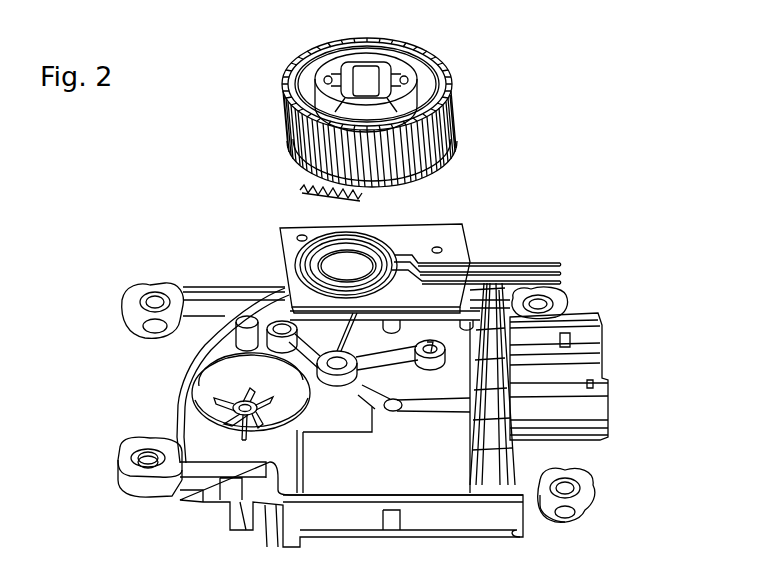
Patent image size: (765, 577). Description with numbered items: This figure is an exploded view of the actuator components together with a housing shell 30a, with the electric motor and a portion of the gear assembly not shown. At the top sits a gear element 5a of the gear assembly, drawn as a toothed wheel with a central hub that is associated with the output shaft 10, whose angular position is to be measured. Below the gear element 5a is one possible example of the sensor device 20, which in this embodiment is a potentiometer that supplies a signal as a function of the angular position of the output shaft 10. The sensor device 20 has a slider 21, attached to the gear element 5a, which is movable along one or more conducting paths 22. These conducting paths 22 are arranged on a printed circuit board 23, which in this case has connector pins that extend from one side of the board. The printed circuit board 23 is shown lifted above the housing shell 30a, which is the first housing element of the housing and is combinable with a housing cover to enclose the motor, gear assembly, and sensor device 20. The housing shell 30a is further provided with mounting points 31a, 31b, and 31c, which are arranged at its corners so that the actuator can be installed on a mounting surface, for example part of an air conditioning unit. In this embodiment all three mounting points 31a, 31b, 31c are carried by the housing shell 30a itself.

The output shaft 10 is at (440, 65).
The gear element 5a is at (442, 135).
The sensor device 20 is at (257, 180).
The slider 21 is at (362, 195).
The conducting paths 22 is at (466, 226).
The printed circuit board 23 is at (467, 251).
The housing shell 30a is at (172, 400).
The mounting point 31a is at (592, 493).
The mounting point 31b is at (553, 298).
The mounting point 31c is at (128, 291).